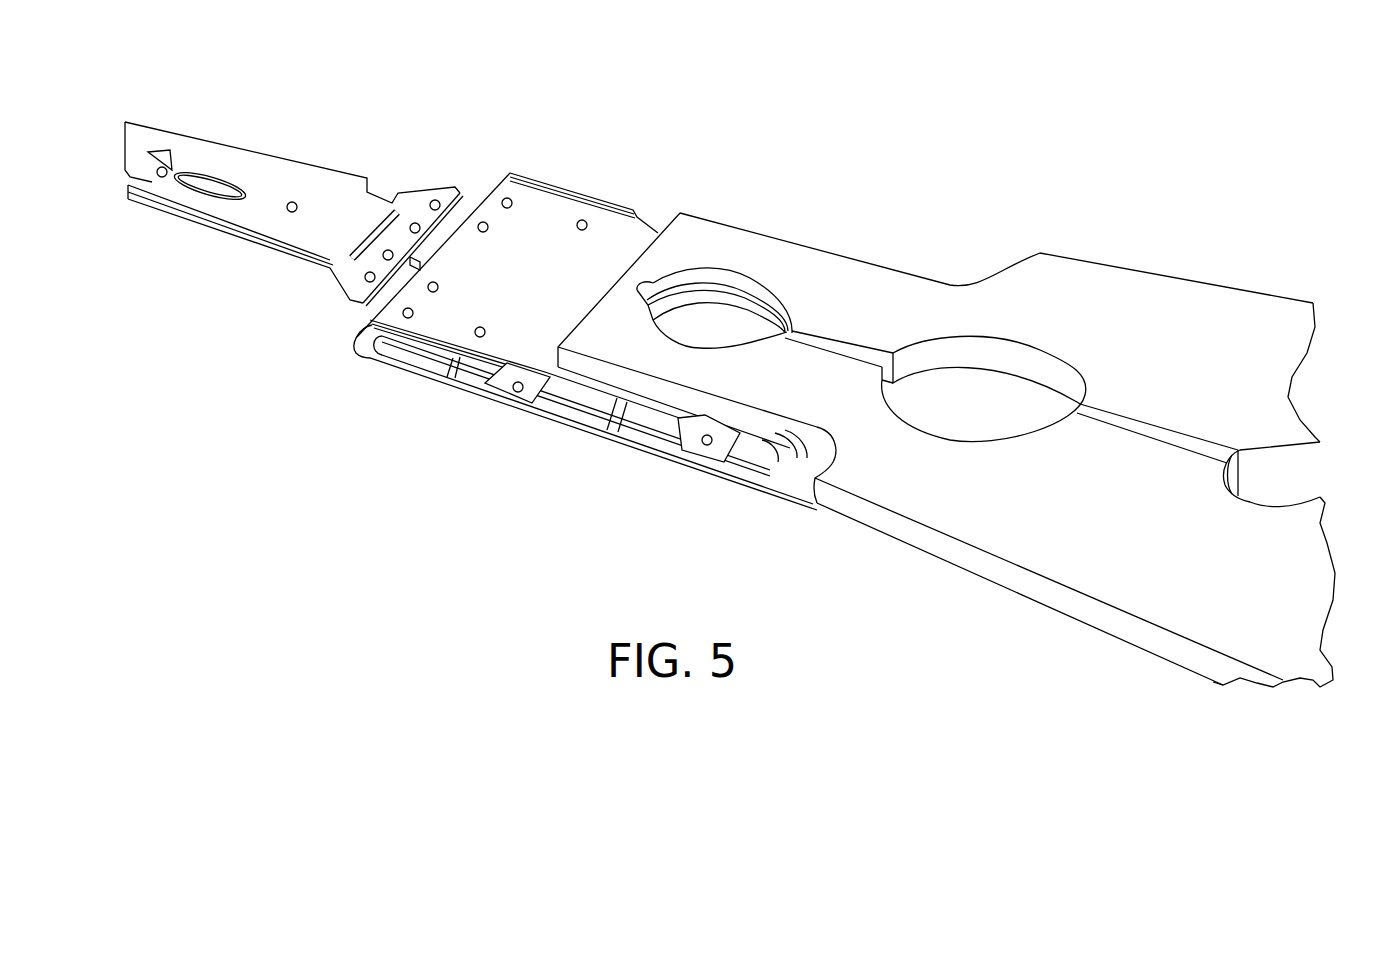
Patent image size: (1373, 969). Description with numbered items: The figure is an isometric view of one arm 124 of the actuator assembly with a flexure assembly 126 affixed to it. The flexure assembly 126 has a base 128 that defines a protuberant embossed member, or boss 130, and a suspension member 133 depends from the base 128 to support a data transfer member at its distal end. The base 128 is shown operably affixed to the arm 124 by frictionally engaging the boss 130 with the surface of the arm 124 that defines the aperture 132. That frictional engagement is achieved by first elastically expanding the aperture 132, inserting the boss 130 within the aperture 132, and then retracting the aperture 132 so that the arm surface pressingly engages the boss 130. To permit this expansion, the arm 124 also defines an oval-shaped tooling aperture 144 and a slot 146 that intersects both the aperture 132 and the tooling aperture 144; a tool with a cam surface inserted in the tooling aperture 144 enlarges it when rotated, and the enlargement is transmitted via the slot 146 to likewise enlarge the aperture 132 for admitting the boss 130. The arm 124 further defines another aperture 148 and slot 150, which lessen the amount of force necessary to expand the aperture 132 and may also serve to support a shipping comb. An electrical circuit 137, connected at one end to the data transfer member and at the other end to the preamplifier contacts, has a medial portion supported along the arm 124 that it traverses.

The arm 124 is at (907, 502).
The flexure assembly 126 is at (403, 97).
The base 128 is at (483, 268).
The boss 130 is at (680, 308).
The aperture 132 is at (748, 282).
The suspension member 133 is at (228, 145).
The electrical circuit 137 is at (410, 373).
The tooling aperture 144 is at (1017, 350).
The slot 146 is at (827, 333).
The another aperture 148 is at (1280, 440).
The slot 150 is at (1238, 450).